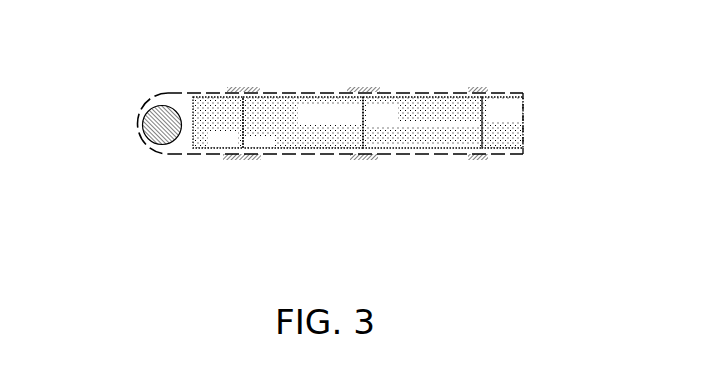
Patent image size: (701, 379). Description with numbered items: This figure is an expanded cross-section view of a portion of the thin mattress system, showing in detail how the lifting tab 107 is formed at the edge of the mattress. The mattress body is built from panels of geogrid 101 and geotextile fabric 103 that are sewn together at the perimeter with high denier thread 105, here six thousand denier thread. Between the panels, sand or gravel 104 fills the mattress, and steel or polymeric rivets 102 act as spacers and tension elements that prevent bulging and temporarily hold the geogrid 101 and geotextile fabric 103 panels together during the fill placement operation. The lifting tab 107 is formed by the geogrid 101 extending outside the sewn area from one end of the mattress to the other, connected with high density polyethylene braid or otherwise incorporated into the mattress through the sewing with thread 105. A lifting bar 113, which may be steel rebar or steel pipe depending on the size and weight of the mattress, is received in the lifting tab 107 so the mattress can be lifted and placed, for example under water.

The geogrid 101 is at (512, 158).
The rivets 102 is at (357, 92).
The geotextile fabric 103 is at (433, 95).
The sand or gravel 104 is at (512, 117).
The high denier thread 105 is at (207, 100).
The lifting tab 107 is at (167, 93).
The lifting bar 113 is at (151, 128).